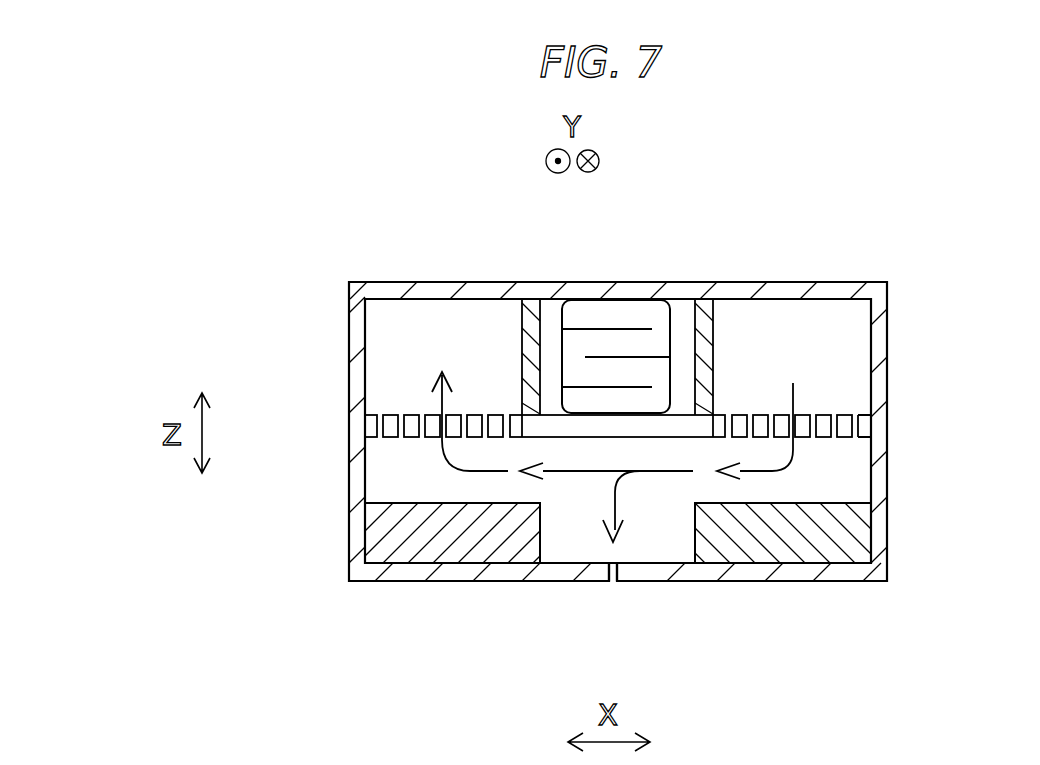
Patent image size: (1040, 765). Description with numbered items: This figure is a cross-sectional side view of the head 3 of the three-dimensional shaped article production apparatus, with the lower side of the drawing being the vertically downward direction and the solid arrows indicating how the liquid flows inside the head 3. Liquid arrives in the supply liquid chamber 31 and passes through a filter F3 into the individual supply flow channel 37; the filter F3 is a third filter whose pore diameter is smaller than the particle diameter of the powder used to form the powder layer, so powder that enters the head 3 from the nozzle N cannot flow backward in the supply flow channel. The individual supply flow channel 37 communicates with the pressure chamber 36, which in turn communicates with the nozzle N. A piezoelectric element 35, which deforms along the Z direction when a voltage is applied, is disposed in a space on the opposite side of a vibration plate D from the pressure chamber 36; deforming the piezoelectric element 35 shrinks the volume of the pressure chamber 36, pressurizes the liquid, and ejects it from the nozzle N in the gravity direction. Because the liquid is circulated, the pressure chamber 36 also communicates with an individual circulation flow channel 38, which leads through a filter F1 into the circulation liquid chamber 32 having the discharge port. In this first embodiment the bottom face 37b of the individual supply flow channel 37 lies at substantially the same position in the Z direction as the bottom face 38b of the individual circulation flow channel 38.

The head 3 is at (975, 284).
The supply liquid chamber 31 is at (828, 343).
The circulation liquid chamber 32 is at (413, 345).
The piezoelectric element 35 is at (634, 313).
The pressure chamber 36 is at (638, 530).
The individual supply flow channel 37 is at (802, 468).
The bottom face of the individual supply flow channel 37b is at (765, 500).
The individual circulation flow channel 38 is at (420, 472).
The bottom face of the individual circulation flow channel 38b is at (463, 500).
The nozzle N is at (612, 582).
The vibration plate D is at (577, 435).
The filter F1 is at (417, 412).
The filter F3 is at (845, 412).